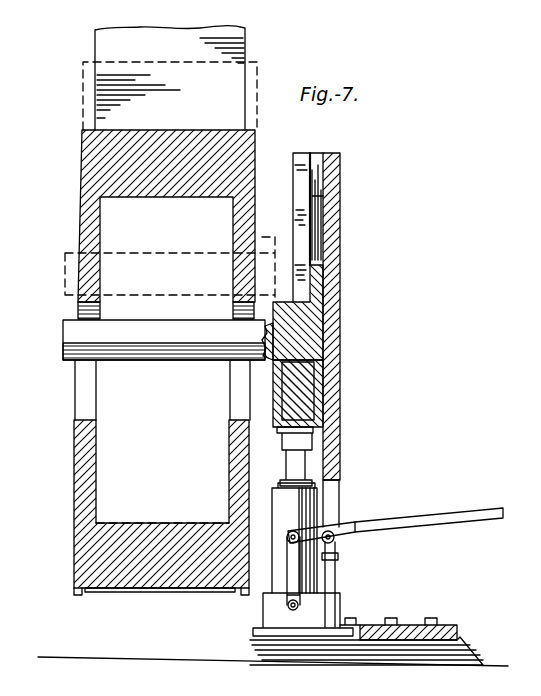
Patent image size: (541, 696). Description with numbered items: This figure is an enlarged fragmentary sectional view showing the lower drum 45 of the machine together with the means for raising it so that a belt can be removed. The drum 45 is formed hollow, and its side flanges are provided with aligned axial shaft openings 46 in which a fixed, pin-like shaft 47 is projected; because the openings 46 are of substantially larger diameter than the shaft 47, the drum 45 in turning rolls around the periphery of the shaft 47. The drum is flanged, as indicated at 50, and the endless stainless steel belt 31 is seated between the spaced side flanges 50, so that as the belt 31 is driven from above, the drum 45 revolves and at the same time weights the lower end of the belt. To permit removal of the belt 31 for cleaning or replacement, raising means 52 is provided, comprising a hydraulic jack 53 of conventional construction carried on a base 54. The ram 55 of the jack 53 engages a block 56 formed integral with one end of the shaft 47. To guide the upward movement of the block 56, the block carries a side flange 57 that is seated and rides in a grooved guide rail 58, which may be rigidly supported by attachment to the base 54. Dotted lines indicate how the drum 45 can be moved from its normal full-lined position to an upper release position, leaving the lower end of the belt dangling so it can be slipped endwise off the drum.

The endless stainless steel belt 31 is at (160, 595).
The drum 45 is at (88, 560).
The axial shaft opening 46 is at (88, 400).
The fixed shaft 47 is at (82, 350).
The flange 50 is at (78, 596).
The raising means 52 is at (346, 513).
The hydraulic jack 53 is at (305, 580).
The base 54 is at (456, 644).
The ram 55 is at (296, 470).
The block 56 is at (312, 410).
The side flange 57 is at (318, 287).
The grooved guide rail 58 is at (320, 237).